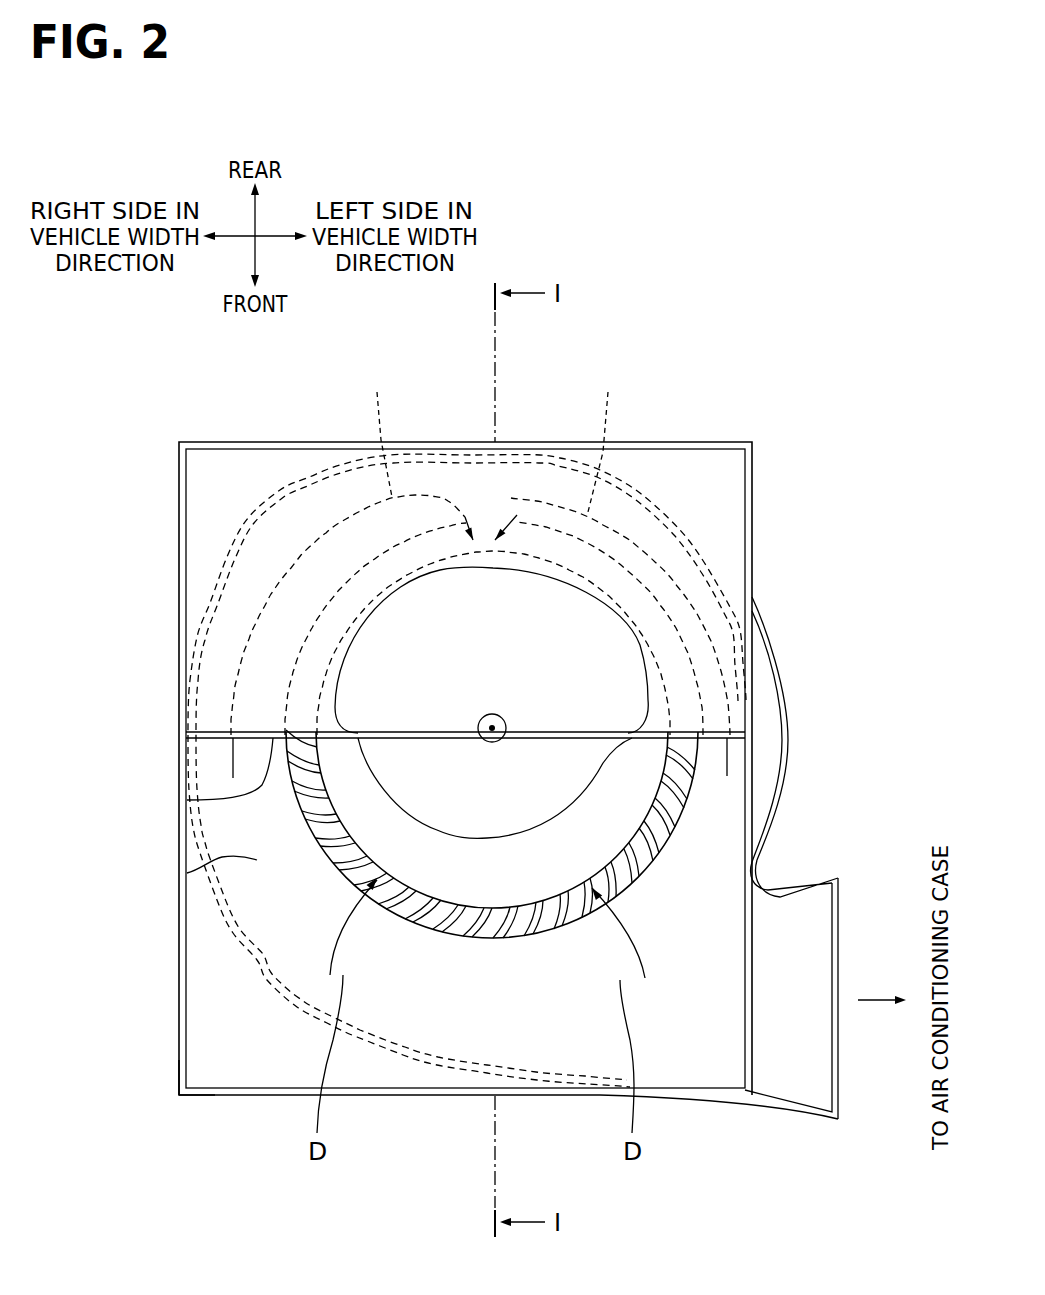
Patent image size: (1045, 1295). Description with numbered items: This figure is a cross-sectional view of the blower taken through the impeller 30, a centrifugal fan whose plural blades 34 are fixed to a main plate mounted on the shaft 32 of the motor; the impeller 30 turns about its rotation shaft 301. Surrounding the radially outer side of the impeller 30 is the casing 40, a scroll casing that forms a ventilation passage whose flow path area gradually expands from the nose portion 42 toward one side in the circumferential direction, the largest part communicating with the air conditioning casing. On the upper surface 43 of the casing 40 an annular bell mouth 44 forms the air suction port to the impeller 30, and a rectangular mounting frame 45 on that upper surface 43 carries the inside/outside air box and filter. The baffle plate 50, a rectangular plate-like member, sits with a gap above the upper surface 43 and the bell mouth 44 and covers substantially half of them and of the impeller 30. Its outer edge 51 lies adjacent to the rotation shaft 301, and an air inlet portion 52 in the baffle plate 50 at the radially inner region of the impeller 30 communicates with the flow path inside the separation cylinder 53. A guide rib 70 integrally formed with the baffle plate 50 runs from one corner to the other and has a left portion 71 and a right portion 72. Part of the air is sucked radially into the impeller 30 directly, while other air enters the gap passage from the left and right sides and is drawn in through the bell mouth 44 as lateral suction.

The impeller 30 is at (492, 948).
The blades 34 is at (433, 927).
The shaft 32 is at (477, 725).
The rotation shaft 301 is at (480, 718).
The casing 40 is at (805, 858).
The nose portion 42 is at (767, 878).
The upper surface 43 is at (187, 873).
The bell mouth 44 is at (318, 832).
The mounting frame 45 is at (181, 1090).
The baffle plate 50 is at (712, 492).
The outer edge 51 is at (187, 800).
The air inlet portion 52 is at (415, 593).
The separation cylinder 53 is at (597, 772).
The guide rib 70 is at (468, 549).
The left portion 71 is at (248, 518).
The right portion 72 is at (650, 498).